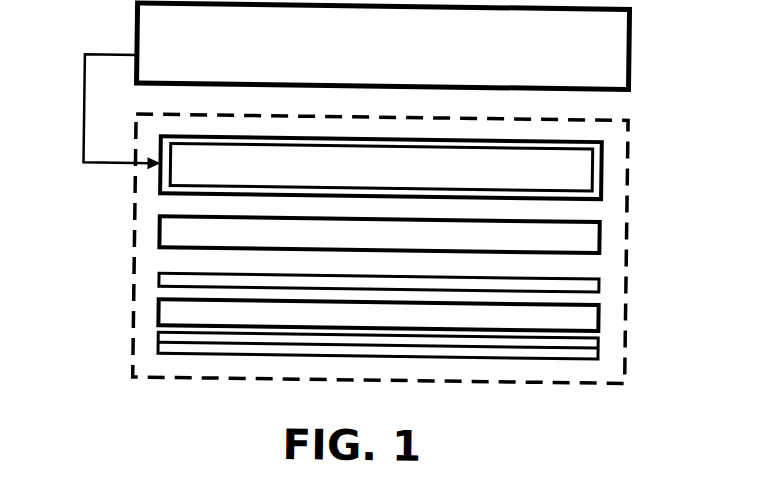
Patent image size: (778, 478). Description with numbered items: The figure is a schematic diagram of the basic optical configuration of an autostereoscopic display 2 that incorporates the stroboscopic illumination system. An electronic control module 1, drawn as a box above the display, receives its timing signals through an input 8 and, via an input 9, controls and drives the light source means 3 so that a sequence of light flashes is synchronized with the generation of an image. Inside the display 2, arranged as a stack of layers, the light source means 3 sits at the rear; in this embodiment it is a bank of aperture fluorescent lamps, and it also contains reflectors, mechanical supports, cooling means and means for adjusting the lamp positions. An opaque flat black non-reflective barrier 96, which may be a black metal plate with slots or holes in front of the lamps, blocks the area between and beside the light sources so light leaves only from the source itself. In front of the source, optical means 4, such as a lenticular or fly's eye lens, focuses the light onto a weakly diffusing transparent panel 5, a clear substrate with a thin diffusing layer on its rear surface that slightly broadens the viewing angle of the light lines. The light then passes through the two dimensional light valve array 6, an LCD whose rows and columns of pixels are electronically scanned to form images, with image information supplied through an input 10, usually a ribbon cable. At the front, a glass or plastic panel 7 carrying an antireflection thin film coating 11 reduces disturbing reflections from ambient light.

The electronic control module 1 is at (628, 56).
The autostereoscopic display 2 is at (627, 114).
The light source means 3 is at (582, 166).
The barrier 96 is at (603, 170).
The optical means 4 is at (600, 232).
The weakly diffusing transparent panel 5 is at (600, 279).
The light valve array 6 is at (600, 313).
The glass or plastic panel 7 is at (600, 338).
The input 8 is at (128, 29).
The input 9 is at (104, 118).
The input 10 is at (150, 303).
The antireflection thin film coating 11 is at (575, 353).